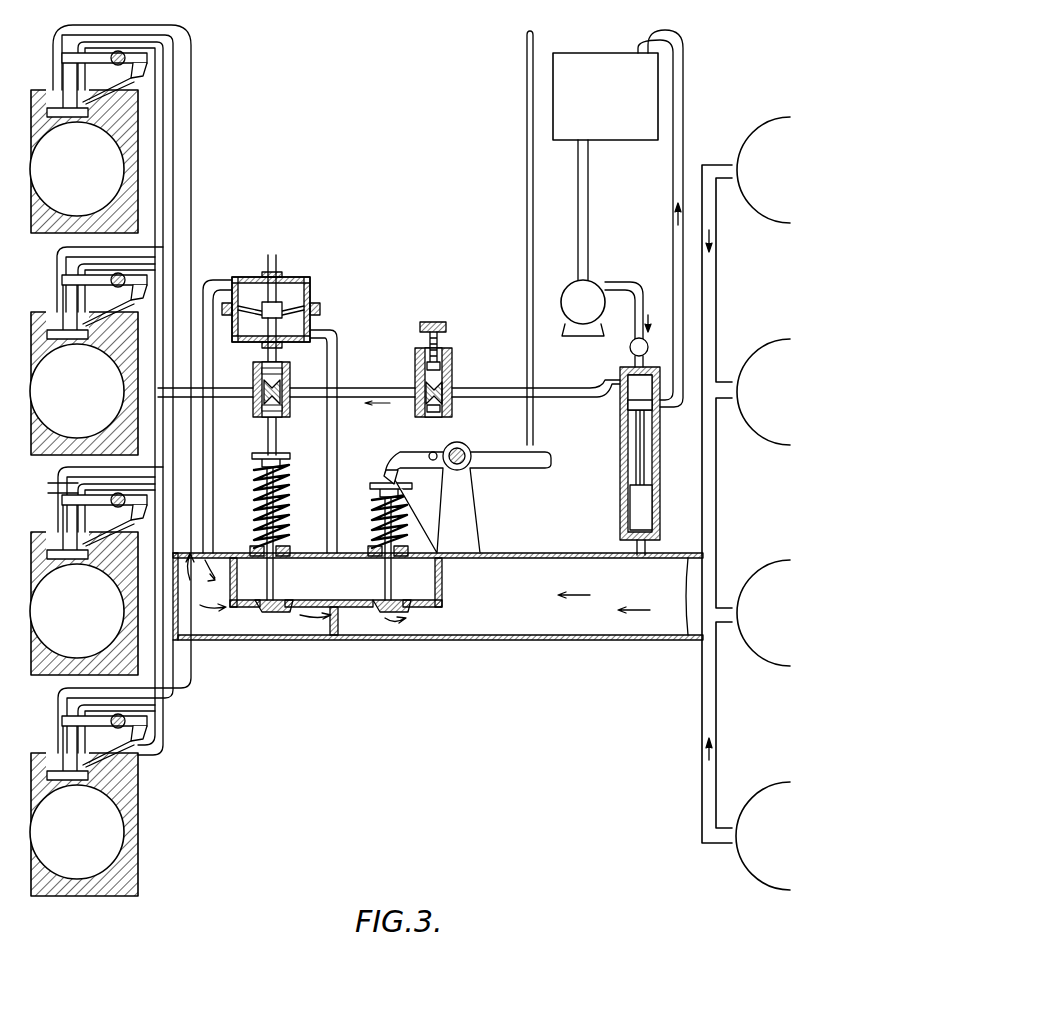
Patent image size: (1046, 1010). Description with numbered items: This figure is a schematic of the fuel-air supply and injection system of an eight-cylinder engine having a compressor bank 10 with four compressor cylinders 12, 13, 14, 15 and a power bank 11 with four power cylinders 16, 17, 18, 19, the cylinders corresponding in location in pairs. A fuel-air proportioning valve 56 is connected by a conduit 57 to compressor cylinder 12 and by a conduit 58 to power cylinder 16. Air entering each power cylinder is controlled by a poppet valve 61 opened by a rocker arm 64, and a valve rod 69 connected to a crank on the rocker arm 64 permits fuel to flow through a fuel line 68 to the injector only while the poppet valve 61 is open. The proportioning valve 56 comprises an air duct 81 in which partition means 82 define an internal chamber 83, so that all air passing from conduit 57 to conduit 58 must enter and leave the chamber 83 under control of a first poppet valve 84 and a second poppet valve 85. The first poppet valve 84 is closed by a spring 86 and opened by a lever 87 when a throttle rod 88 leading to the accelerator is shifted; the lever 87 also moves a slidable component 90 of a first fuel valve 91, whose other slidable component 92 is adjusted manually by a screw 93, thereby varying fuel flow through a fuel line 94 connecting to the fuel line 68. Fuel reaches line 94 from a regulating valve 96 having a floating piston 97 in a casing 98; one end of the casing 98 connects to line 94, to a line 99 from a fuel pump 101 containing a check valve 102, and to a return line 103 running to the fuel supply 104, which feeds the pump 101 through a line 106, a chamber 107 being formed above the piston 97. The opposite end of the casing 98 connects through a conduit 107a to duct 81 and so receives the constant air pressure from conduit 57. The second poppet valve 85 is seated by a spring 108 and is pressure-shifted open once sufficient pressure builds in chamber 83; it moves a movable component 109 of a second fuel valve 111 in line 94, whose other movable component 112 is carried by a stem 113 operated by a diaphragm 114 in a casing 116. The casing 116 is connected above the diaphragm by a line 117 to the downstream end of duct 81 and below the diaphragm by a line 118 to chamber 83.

The compressor bank 10 is at (738, 888).
The power bank 11 is at (78, 915).
The compressor cylinder 12 is at (778, 786).
The compressor cylinder 13 is at (768, 572).
The compressor cylinder 14 is at (762, 350).
The compressor cylinder 15 is at (762, 130).
The power cylinder 16 is at (140, 856).
The power cylinder 17 is at (36, 675).
The power cylinder 18 is at (36, 455).
The power cylinder 19 is at (36, 233).
The fuel-air proportioning valve 56 is at (388, 660).
The conduit 57 is at (718, 250).
The conduit 58 is at (192, 152).
The poppet valve 61 is at (70, 118).
The rocker arm 64 is at (140, 66).
The fuel line 68 is at (120, 100).
The valve rod 69 is at (72, 302).
The air duct 81 is at (490, 641).
The partition means 82 is at (370, 600).
The internal chamber 83 is at (345, 570).
The first poppet valve 84 is at (412, 614).
The second poppet valve 85 is at (272, 614).
The spring 86 is at (408, 496).
The lever 87 is at (512, 462).
The throttle rod 88 is at (525, 76).
The slidable component 90 is at (452, 410).
The first fuel valve 91 is at (455, 365).
The slidable component 92 is at (427, 363).
The screw 93 is at (433, 322).
The fuel line 94 is at (514, 390).
The regulating valve 96 is at (614, 446).
The floating piston 97 is at (636, 462).
The casing 98 is at (655, 500).
The line 99 is at (645, 294).
The fuel pump 101 is at (565, 286).
The check valve 102 is at (629, 348).
The return line 103 is at (685, 100).
The fuel supply 104 is at (572, 58).
The line 106 is at (589, 181).
The chamber 107 is at (627, 390).
The conduit 107a is at (637, 546).
The spring 108 is at (288, 478).
The movable component 109 is at (290, 412).
The second fuel valve 111 is at (252, 408).
The movable component 112 is at (290, 378).
The stem 113 is at (280, 262).
The diaphragm 114 is at (300, 305).
The casing 116 is at (320, 320).
The line 117 is at (208, 472).
The line 118 is at (338, 434).